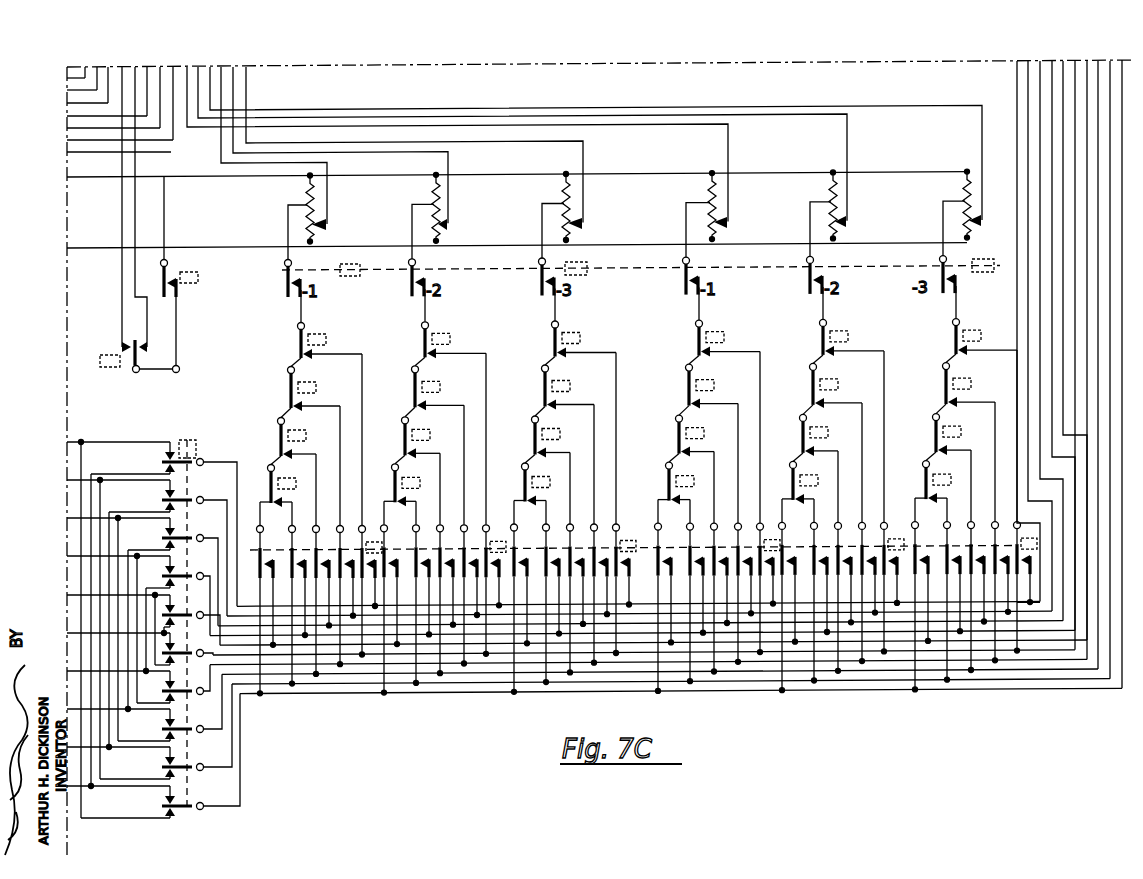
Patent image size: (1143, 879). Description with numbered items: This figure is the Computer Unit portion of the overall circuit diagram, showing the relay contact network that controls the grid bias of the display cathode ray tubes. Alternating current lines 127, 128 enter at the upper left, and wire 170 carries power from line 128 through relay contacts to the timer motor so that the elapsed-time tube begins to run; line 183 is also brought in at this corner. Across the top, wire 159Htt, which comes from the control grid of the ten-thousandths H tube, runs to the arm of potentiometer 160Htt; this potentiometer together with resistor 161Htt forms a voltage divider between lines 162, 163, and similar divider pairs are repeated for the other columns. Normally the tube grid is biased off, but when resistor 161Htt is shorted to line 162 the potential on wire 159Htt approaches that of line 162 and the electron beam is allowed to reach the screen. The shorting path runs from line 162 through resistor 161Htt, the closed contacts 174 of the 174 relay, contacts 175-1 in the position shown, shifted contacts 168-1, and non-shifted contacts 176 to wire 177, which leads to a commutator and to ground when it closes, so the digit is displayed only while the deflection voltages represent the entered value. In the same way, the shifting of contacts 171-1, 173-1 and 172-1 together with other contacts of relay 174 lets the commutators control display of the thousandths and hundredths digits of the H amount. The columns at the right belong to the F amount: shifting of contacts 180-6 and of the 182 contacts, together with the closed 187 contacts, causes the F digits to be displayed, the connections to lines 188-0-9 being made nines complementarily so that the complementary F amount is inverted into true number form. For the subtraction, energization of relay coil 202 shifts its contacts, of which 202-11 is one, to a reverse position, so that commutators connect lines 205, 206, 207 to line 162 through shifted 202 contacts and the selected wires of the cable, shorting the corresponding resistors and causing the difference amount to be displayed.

The input line 183 is at (67, 78).
The wire 170 is at (67, 90).
The alternating current line 127 is at (67, 103).
The alternating current line 128 is at (67, 116).
The wire 159Htt is at (221, 152).
The resistor 161Htt is at (306, 194).
The potentiometer 160Htt is at (322, 230).
The line 162 is at (83, 178).
The line 163 is at (90, 248).
The relay contacts 174 is at (370, 272).
The relay contacts 187 is at (986, 272).
The contacts 175-1 is at (309, 478).
The contacts 168-1 is at (290, 398).
The contacts 171-1 is at (425, 477).
The contacts 176 is at (345, 545).
The contacts 172-1 is at (558, 476).
The contacts 173-1 is at (480, 545).
The contacts 180-6 is at (797, 497).
The relay contacts 182 is at (880, 545).
The relay coil 202 is at (184, 440).
The contacts 202-11 is at (137, 352).
The lines 188-0-9 is at (93, 798).
The wire 177 is at (425, 668).
The line 205 is at (878, 684).
The line 206 is at (812, 680).
The line 207 is at (716, 682).